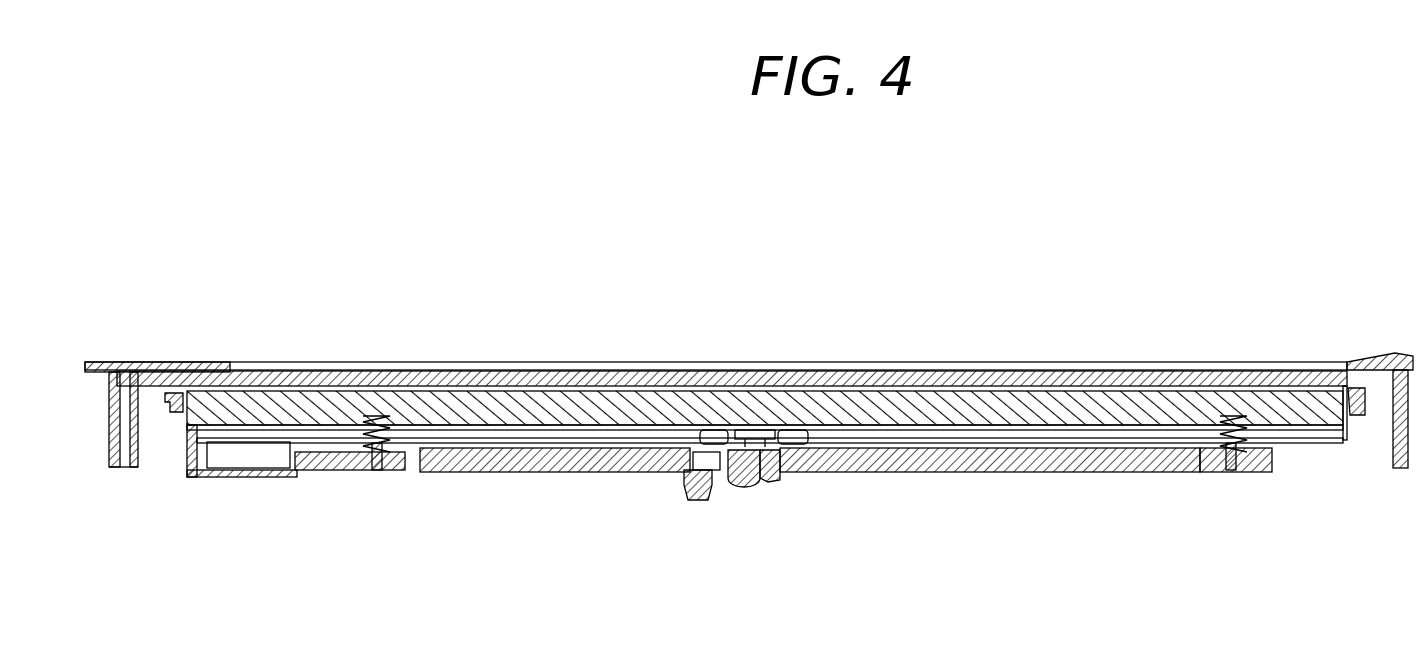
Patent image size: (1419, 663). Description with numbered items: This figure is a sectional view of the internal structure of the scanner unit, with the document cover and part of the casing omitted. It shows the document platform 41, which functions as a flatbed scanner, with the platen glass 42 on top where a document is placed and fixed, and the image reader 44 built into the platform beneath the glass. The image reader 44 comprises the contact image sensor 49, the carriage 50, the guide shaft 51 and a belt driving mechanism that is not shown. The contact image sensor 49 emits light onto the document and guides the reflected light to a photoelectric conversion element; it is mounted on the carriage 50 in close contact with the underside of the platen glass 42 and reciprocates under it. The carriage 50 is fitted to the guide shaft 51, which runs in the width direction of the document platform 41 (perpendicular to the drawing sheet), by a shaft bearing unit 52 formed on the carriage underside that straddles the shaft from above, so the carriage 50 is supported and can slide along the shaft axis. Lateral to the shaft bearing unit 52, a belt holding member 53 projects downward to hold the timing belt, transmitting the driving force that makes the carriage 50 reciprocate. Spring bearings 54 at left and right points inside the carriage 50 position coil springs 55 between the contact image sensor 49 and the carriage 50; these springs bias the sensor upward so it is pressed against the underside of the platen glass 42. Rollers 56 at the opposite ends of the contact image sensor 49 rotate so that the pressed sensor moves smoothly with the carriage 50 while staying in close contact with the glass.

The document platform 41 is at (142, 362).
The platen glass 42 is at (545, 371).
The image reader 44 is at (1075, 548).
The contact image sensor 49 is at (675, 391).
The carriage 50 is at (765, 522).
The guide shaft 51 is at (750, 486).
The shaft bearing unit 52 is at (765, 483).
The belt holding member 53 is at (700, 500).
The spring bearing 54 is at (374, 455).
The coil spring 55 is at (345, 456).
The roller 56 is at (170, 412).